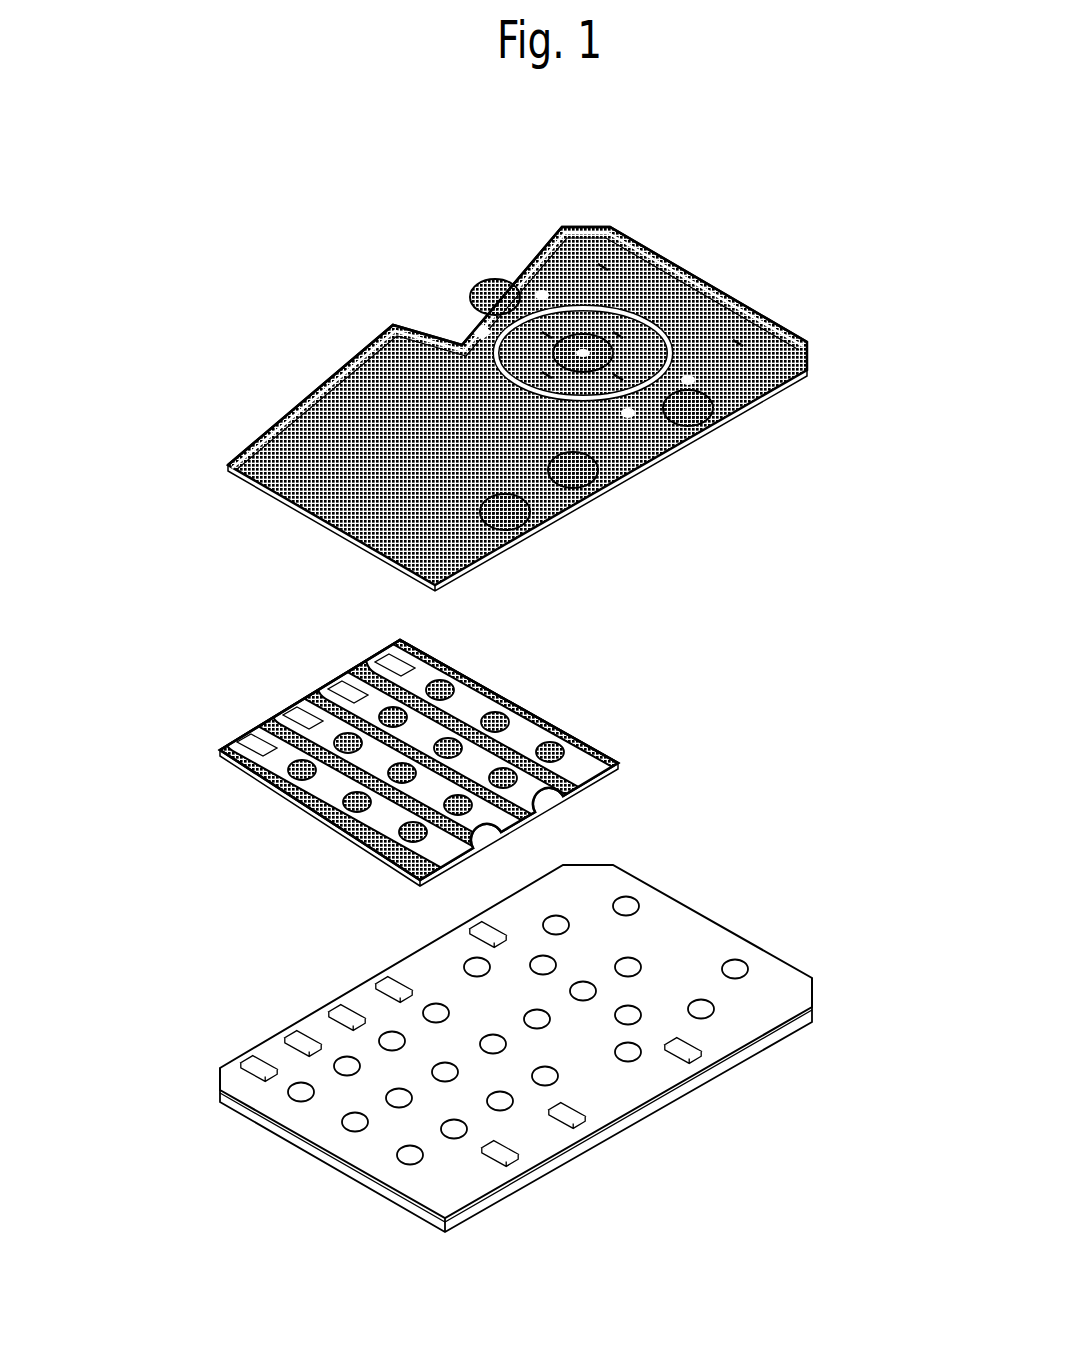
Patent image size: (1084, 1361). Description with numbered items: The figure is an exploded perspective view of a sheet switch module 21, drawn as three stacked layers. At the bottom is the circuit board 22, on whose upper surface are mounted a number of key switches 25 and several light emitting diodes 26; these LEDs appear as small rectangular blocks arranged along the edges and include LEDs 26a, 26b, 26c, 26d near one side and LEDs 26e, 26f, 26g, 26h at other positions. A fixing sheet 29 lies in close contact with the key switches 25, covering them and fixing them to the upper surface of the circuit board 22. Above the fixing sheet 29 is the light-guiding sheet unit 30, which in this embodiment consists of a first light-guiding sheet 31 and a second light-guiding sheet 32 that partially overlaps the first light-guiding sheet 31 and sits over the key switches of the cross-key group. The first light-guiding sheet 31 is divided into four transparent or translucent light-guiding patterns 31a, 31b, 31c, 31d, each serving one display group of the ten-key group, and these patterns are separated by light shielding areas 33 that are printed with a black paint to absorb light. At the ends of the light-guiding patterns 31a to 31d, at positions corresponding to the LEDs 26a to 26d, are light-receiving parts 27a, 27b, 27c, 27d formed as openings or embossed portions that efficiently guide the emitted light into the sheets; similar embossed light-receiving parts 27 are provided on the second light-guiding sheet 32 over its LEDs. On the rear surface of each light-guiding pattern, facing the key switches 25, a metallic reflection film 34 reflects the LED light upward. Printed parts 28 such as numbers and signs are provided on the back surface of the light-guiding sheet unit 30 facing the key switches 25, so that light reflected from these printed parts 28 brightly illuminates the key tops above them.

The sheet switch module 21 is at (632, 196).
The circuit board 22 is at (248, 1113).
The key switch 25 is at (345, 1138).
The light emitting diode 26 is at (224, 1072).
The light emitting diode 26a is at (382, 988).
The light emitting diode 26b is at (343, 1012).
The light emitting diode 26c is at (298, 1037).
The light emitting diode 26d is at (252, 1062).
The light emitting diode 26e is at (472, 930).
The light emitting diode 26f is at (695, 1058).
The light emitting diode 26g is at (582, 1122).
The light emitting diode 26h is at (513, 1160).
The light-receiving part 27 is at (718, 409).
The light-receiving part 27a is at (392, 662).
The light-receiving part 27b is at (345, 690).
The light-receiving part 27c is at (300, 715).
The light-receiving part 27d is at (253, 740).
The printed part 28 is at (556, 303).
The fixing sheet 29 is at (218, 1090).
The light-guiding sheet unit 30 is at (165, 452).
The first light-guiding sheet 31 is at (600, 726).
The light-guiding pattern 31a is at (588, 772).
The light-guiding pattern 31b is at (560, 797).
The light-guiding pattern 31c is at (528, 808).
The light-guiding pattern 31d is at (375, 822).
The second light-guiding sheet 32 is at (820, 332).
The light shielding area 33 is at (372, 385).
The reflection film 34 is at (447, 683).